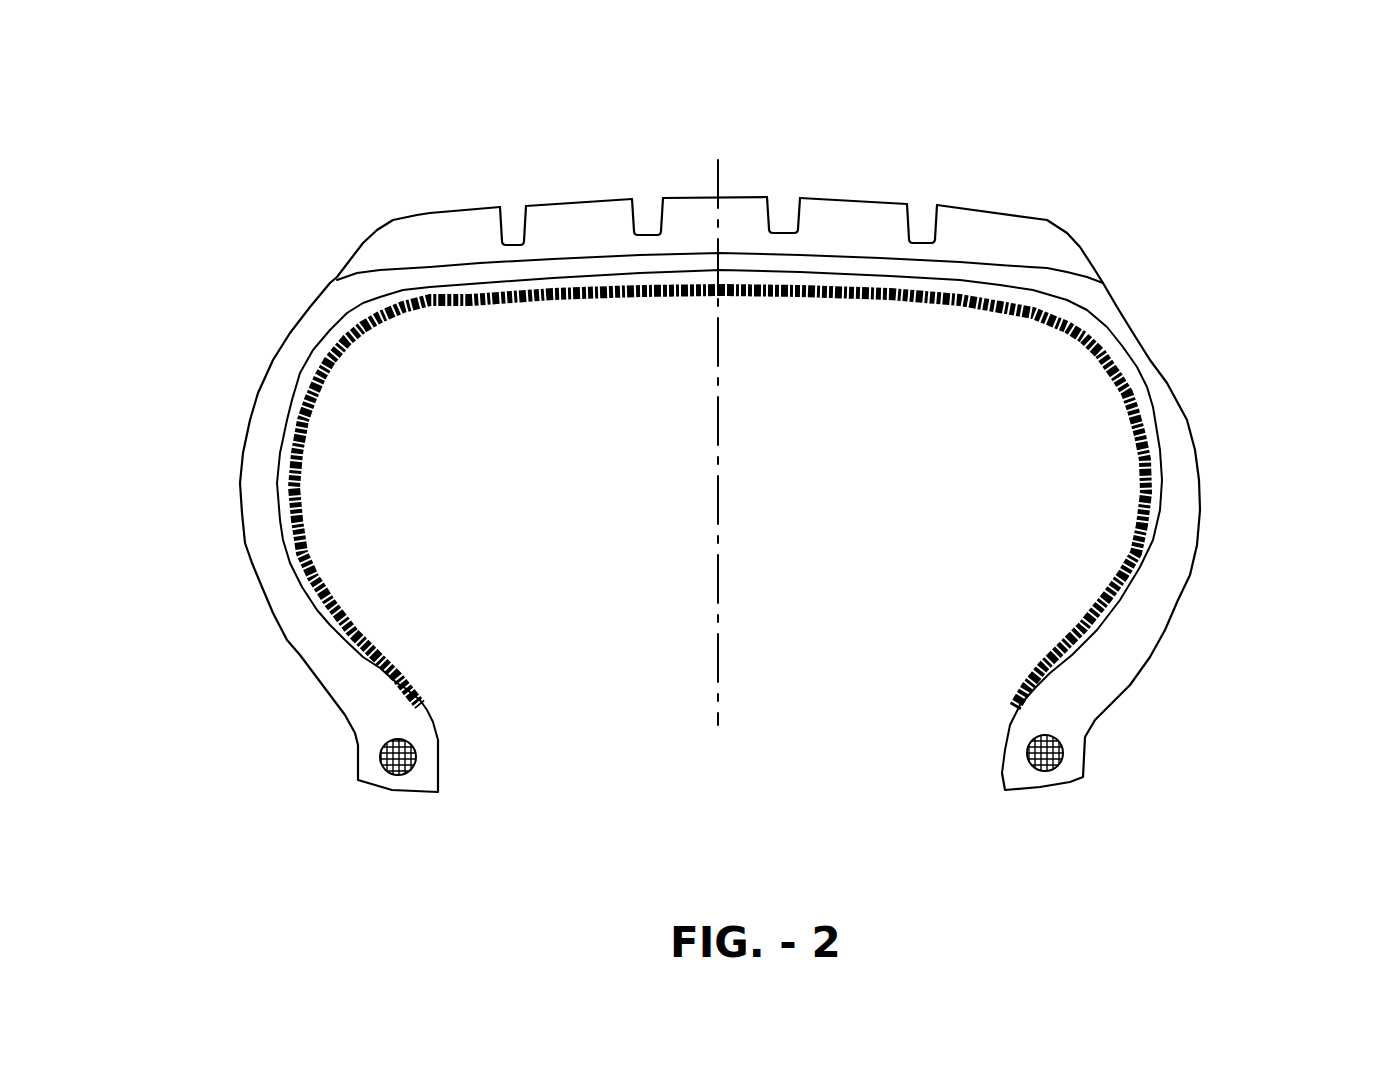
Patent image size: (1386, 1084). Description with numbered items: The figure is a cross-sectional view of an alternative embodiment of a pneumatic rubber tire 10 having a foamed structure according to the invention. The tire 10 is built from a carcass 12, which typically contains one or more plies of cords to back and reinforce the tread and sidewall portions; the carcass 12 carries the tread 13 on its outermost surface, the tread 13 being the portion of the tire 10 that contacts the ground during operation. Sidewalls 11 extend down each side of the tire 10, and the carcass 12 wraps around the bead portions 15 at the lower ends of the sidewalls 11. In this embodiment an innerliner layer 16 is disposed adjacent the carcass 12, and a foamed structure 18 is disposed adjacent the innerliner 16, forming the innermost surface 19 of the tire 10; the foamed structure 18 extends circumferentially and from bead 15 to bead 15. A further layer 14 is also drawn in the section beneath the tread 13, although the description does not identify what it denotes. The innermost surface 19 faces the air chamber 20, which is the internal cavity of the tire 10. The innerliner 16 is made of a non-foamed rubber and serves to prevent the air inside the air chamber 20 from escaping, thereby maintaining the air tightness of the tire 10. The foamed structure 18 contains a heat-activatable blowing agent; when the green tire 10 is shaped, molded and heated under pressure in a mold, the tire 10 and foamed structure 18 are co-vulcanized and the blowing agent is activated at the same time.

The tire 10 is at (378, 183).
The sidewalls 11 is at (240, 483).
The carcass 12 is at (1040, 278).
The tread portion 13 is at (685, 210).
The carcass ply 14 is at (570, 292).
The bead portions 15 is at (384, 771).
The innerliner layer 16 is at (847, 280).
The foamed structure 18 is at (920, 300).
The innermost surface 19 is at (609, 297).
The air chamber 20 is at (790, 523).